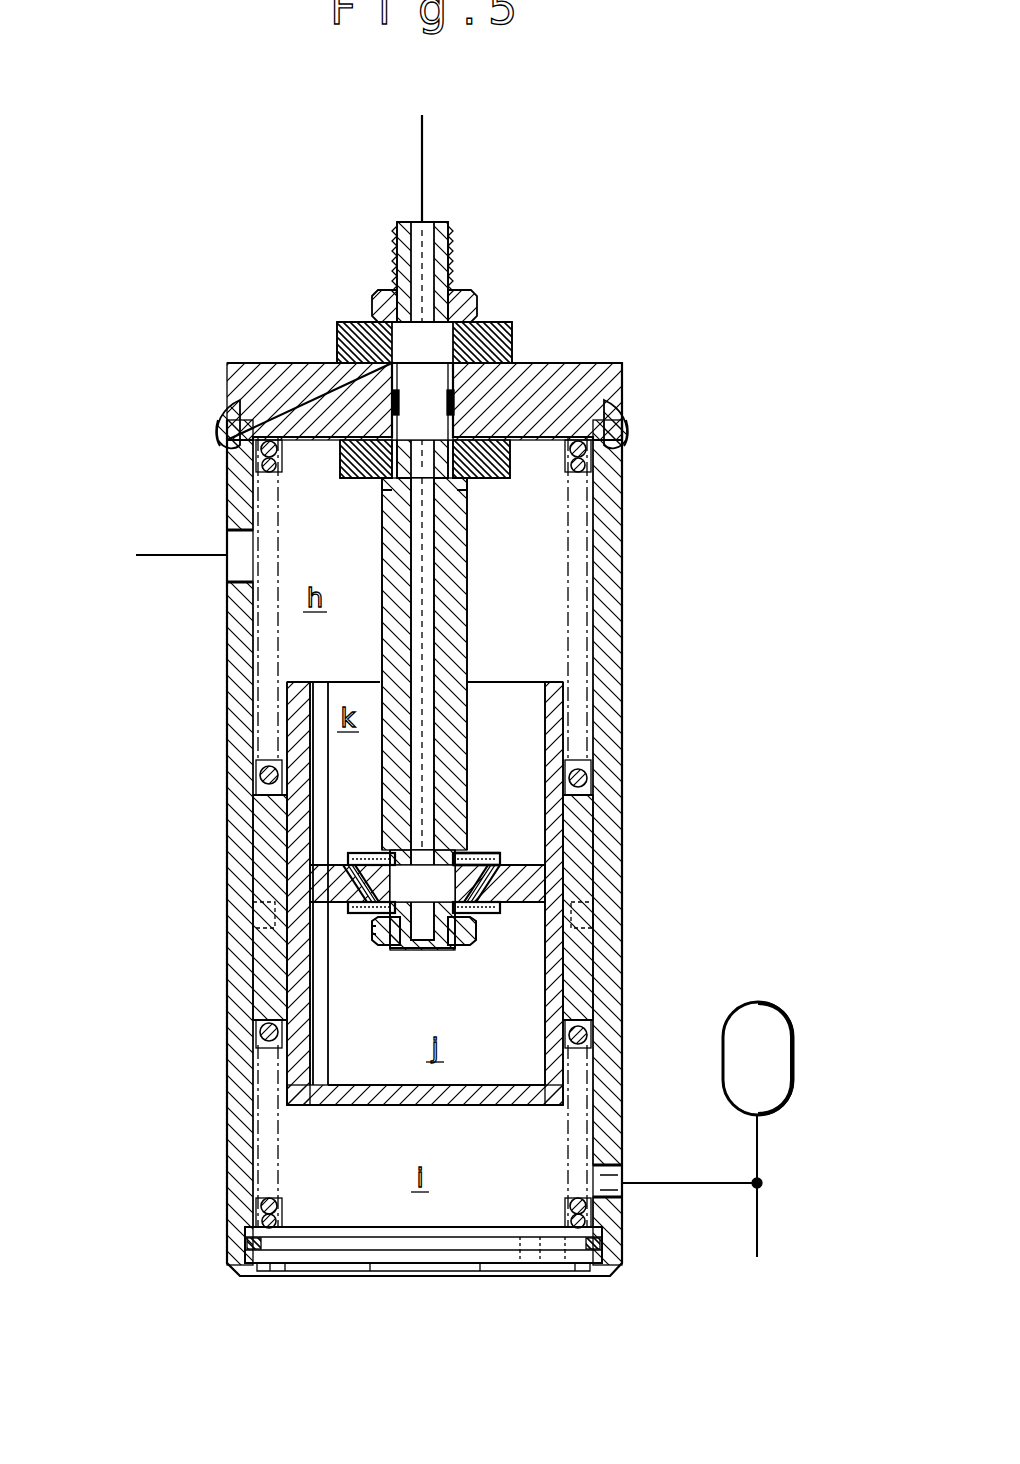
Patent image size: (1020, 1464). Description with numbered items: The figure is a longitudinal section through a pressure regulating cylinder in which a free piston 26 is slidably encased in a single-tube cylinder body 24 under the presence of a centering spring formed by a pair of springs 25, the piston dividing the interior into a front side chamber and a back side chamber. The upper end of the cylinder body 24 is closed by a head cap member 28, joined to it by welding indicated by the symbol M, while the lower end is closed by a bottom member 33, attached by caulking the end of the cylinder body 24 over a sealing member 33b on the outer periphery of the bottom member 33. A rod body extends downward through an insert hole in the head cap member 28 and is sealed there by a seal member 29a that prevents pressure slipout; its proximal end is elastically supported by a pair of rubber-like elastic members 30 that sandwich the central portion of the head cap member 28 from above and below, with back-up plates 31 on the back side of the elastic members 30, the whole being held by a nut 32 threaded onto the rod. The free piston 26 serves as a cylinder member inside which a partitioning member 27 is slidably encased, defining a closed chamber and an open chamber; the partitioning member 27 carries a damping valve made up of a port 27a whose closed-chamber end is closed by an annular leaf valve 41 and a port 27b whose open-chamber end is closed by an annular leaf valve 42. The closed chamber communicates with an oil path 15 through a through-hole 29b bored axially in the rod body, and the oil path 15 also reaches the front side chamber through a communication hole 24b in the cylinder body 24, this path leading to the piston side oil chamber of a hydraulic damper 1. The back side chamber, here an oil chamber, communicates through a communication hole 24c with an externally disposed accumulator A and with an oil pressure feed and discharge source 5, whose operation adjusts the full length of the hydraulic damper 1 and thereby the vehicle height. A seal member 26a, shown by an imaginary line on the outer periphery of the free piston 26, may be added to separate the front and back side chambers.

The hydraulic damper 1 is at (267, 325).
The oil path 15 is at (422, 185).
The cylinder body 24 is at (236, 903).
The communication hole 24b is at (240, 568).
The communication hole 24c is at (636, 1173).
The springs 25 is at (586, 462).
The free piston 26 is at (270, 818).
The seal member 26a is at (596, 916).
The partitioning member 27 is at (340, 862).
The port 27a is at (340, 912).
The port 27b is at (502, 912).
The head cap member 28 is at (592, 383).
The seal member 29a is at (390, 420).
The through-hole 29b is at (430, 937).
The elastic members 30 is at (512, 345).
The back-up plates 31 is at (480, 320).
The nut 32 is at (372, 292).
The bottom member 33 is at (426, 1262).
The sealing member 33b is at (250, 1243).
The annular leaf valve 41 is at (366, 932).
The annular leaf valve 42 is at (497, 858).
The accumulator A is at (757, 1002).
The oil pressure feed and discharge source 5 is at (693, 1205).
The welding M is at (631, 432).